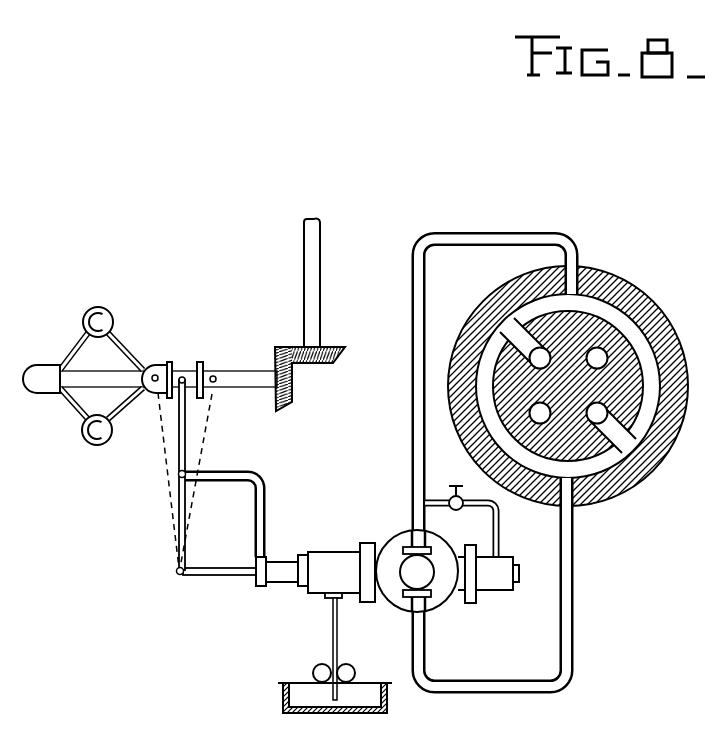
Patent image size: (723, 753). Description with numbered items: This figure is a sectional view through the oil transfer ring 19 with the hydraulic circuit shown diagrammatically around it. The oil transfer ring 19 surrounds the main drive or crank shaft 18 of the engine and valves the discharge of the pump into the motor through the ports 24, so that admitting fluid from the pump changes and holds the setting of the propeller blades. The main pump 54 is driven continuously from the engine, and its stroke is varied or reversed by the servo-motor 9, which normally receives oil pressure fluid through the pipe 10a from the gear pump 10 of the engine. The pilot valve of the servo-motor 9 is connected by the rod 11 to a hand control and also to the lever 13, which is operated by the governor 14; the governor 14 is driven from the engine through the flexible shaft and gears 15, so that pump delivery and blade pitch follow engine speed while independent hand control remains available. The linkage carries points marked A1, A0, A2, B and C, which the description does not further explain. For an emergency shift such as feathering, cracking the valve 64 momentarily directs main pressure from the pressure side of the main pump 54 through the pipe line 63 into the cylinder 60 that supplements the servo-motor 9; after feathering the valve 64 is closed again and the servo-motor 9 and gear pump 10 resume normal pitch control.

The oil transfer ring 19 is at (622, 280).
The crank shaft 18 is at (630, 338).
The ports 24 is at (522, 337).
The pipe line 63 is at (500, 535).
The valve 64 is at (461, 469).
The main pump 54 is at (437, 614).
The cylinder 60 is at (500, 592).
The servo-motor 9 is at (343, 548).
The rod 11 is at (243, 541).
The lever 13 is at (179, 462).
The pivot point A1 is at (155, 374).
The pivot point A0 is at (183, 377).
The pivot point A2 is at (214, 376).
The pivot point B is at (190, 472).
The pivot point C is at (176, 571).
The governor 14 is at (72, 417).
The flexible shaft and gears 15 is at (276, 408).
The pipe 10a is at (331, 620).
The gear pump 10 is at (351, 674).